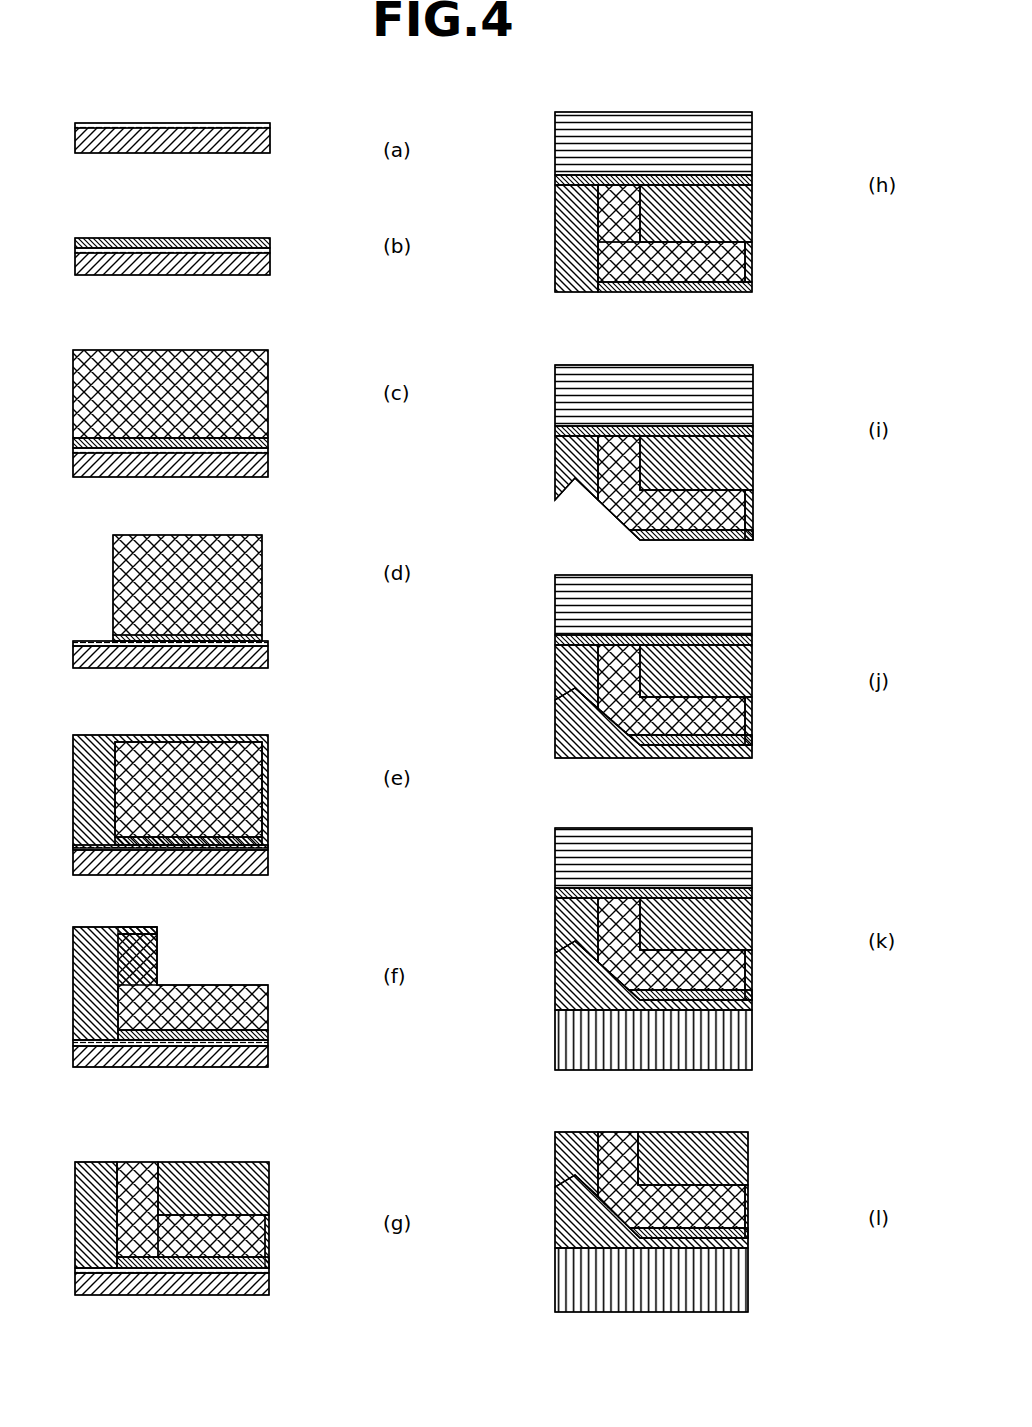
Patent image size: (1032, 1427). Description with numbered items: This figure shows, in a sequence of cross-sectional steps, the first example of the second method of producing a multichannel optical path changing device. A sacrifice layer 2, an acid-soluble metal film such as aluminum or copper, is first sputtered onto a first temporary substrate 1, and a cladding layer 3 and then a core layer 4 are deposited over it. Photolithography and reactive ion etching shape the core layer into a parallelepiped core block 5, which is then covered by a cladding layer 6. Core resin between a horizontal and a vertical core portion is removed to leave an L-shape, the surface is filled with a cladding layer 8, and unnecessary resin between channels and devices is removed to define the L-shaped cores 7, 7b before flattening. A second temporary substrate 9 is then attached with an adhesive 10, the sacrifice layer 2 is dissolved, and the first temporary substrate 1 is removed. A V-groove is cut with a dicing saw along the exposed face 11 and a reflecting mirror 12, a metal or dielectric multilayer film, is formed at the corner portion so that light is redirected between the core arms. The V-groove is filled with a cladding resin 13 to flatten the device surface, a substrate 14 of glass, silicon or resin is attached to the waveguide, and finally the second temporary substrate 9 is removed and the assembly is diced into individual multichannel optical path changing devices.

The first temporary substrate 1 is at (268, 153).
The sacrifice layer 2 is at (266, 123).
The cladding layer 3 is at (255, 238).
The core layer 4 is at (268, 380).
The core block 5 is at (262, 550).
The cladding layer 6 is at (268, 770).
The L-shaped core 7 is at (177, 1002).
The L-shaped core 7b is at (138, 1172).
The cladding layer 8 is at (269, 1190).
The second temporary substrate 9 is at (752, 112).
The adhesive 10 is at (752, 185).
The etched surface of metal layer 11 is at (555, 477).
The reflecting mirror 12 is at (600, 500).
The cladding resin 13 is at (572, 760).
The substrate 14 is at (752, 1040).